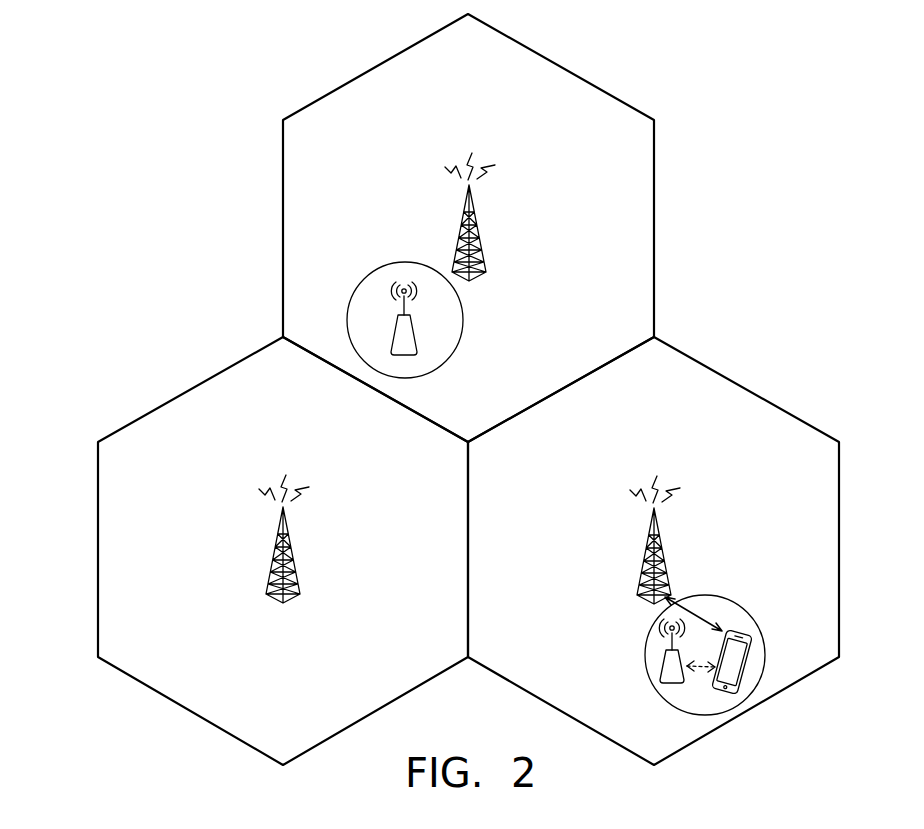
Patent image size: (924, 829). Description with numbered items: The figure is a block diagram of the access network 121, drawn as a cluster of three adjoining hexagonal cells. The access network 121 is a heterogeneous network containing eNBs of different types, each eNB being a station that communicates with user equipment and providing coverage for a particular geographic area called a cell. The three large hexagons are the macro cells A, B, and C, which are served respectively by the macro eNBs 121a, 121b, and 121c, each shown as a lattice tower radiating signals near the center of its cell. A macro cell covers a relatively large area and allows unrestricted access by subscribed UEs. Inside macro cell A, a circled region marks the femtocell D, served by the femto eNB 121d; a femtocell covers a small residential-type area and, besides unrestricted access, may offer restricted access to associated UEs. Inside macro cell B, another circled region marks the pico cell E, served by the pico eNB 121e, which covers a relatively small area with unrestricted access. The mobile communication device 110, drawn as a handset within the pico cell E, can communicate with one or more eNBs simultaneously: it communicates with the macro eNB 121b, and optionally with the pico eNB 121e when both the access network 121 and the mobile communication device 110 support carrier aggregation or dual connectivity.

The access network 121 is at (467, 389).
The eNB 121a is at (481, 232).
The eNB 121b is at (666, 558).
The eNB 121c is at (296, 558).
The eNB 121d is at (418, 332).
The eNB 121e is at (665, 672).
The mobile communication device 110 is at (742, 636).
The macro cell A is at (655, 228).
The macro cell B is at (839, 548).
The macro cell C is at (98, 548).
The femtocell D is at (463, 318).
The pico cell E is at (646, 659).